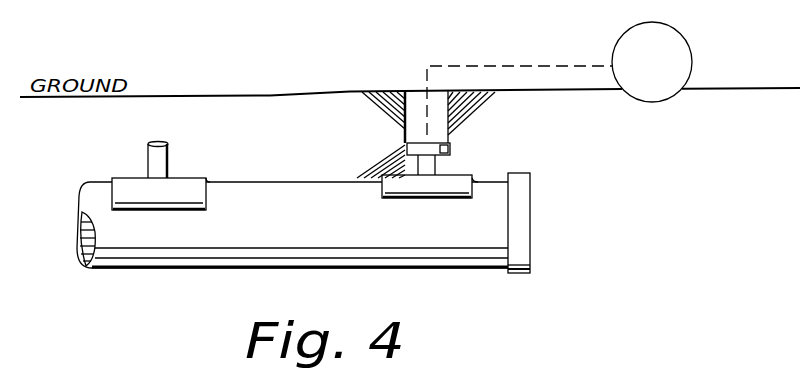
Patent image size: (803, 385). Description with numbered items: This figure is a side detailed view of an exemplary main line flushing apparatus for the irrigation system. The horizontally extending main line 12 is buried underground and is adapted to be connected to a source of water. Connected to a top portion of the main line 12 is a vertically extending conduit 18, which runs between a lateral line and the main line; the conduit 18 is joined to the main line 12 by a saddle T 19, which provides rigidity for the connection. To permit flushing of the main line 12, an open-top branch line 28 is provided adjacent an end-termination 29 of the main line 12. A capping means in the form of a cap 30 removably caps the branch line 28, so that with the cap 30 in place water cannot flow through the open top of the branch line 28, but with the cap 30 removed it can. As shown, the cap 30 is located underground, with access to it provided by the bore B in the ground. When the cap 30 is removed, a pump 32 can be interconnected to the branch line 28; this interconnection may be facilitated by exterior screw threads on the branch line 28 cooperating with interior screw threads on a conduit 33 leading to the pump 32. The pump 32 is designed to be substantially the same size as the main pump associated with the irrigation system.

The main line 12 is at (237, 267).
The vertically extending conduit 18 is at (167, 167).
The saddle T 19 is at (125, 187).
The open-top branch line 28 is at (434, 170).
The end-termination 29 is at (520, 231).
The cap 30 is at (447, 147).
The pump 32 is at (684, 36).
The conduit 33 is at (519, 75).
The bore B is at (412, 91).